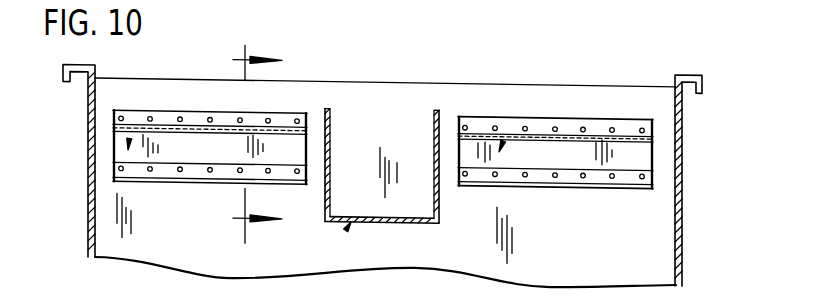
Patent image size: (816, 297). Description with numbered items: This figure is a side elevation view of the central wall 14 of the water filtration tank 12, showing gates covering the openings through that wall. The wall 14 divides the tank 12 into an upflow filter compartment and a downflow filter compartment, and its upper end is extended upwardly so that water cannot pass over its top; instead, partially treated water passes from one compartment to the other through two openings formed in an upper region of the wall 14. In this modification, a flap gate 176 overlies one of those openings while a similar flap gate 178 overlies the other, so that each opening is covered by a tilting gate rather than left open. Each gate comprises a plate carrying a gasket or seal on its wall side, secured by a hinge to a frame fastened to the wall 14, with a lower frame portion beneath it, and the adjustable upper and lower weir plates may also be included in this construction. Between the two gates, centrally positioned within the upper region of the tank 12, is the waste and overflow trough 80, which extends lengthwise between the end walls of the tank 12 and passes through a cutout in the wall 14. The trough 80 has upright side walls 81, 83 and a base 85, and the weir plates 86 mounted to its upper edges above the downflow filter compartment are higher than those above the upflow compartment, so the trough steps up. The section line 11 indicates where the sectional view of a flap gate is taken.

The section line 11- 11 is at (237, 241).
The tank 12 is at (683, 169).
The central wall 14 is at (662, 258).
The waste and overflow trough 80 is at (399, 190).
The upright side wall 81 is at (331, 176).
The upright side wall 83 is at (440, 200).
The base 85 is at (412, 218).
The weir plates 86 is at (331, 121).
The flap gate 176 is at (129, 140).
The flap gate 178 is at (503, 136).